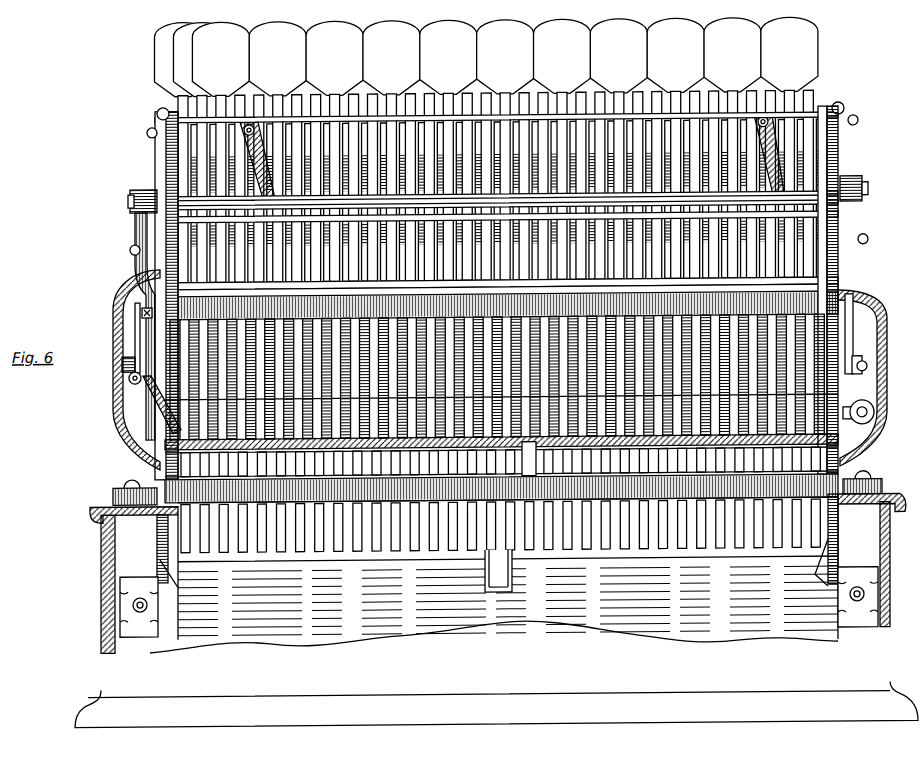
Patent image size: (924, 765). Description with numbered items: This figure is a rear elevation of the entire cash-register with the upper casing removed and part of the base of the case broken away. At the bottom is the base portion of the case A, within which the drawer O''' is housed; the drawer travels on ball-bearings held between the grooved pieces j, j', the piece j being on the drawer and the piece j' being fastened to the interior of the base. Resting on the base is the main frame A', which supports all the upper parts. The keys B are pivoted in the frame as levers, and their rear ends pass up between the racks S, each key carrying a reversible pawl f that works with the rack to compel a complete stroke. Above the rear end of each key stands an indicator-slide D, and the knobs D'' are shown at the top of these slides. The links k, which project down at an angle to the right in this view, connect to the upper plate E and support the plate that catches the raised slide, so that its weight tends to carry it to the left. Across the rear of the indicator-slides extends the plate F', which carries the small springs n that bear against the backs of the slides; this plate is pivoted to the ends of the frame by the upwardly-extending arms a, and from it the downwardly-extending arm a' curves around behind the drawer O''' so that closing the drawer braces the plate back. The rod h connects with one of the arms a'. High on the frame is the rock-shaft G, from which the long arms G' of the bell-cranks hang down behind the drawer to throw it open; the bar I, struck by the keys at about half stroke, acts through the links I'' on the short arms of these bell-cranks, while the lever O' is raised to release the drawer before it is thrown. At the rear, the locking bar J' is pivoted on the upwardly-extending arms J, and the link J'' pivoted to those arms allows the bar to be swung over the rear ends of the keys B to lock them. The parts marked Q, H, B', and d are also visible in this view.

The indicator-slide D is at (496, 180).
The key knobs D'' is at (486, 57).
The upper plate E is at (845, 114).
The link k is at (265, 150).
The upwardly-extending arm a is at (156, 294).
The right frame post Q is at (826, 190).
The right hatched bar H is at (836, 168).
The shaft G is at (485, 308).
The arm of bell-crank lever G' is at (503, 367).
The spring n is at (892, 246).
The plate F' is at (526, 281).
The link I'' is at (497, 341).
The upwardly-extending arm J is at (114, 338).
The link J'' is at (111, 365).
The bar I is at (496, 400).
The rod h is at (863, 406).
The bar J' is at (484, 435).
The main frame A' is at (506, 465).
The base portion of the case A is at (496, 603).
The pawl f is at (365, 474).
The rack S is at (529, 479).
The key B is at (501, 405).
The plate B' is at (508, 566).
The lever O' is at (498, 571).
The drawer O''' is at (494, 575).
The left post d is at (170, 537).
The downwardly-extending arm a' is at (838, 540).
The grooved piece j is at (497, 579).
The grooved piece j' is at (498, 601).